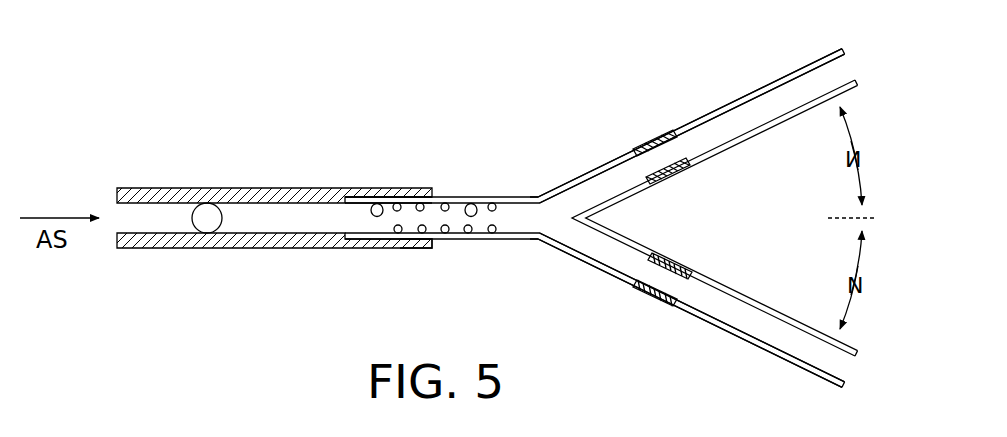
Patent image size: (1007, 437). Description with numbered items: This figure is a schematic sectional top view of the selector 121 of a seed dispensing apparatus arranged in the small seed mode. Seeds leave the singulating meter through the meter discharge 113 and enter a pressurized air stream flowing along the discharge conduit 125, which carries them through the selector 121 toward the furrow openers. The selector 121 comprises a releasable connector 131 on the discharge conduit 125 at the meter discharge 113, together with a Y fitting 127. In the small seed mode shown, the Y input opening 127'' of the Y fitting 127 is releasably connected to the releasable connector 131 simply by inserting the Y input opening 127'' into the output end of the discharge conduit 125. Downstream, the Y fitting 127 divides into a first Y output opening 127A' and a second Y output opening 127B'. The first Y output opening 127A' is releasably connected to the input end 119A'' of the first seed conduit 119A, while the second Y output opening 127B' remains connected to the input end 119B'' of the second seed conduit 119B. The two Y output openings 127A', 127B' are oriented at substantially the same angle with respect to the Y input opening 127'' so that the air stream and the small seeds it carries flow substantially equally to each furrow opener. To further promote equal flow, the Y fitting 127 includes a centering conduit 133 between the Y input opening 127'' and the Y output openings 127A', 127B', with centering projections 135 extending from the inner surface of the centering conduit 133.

The meter discharge 113 is at (224, 216).
The discharge conduit 125 is at (283, 249).
The releasable connector 131 is at (407, 251).
The Y fitting 127 is at (595, 218).
The Y input opening 127'' is at (388, 169).
The centering conduit 133 is at (443, 197).
The centering projections 135 is at (487, 197).
The selector 121 is at (538, 252).
The first seed conduit 119A is at (691, 310).
The second seed conduit 119B is at (691, 117).
The first Y output opening 127A' is at (699, 231).
The second Y output opening 127B' is at (609, 129).
The input end of the first seed conduit 119A'' is at (713, 261).
The input end of the second seed conduit 119B'' is at (656, 118).